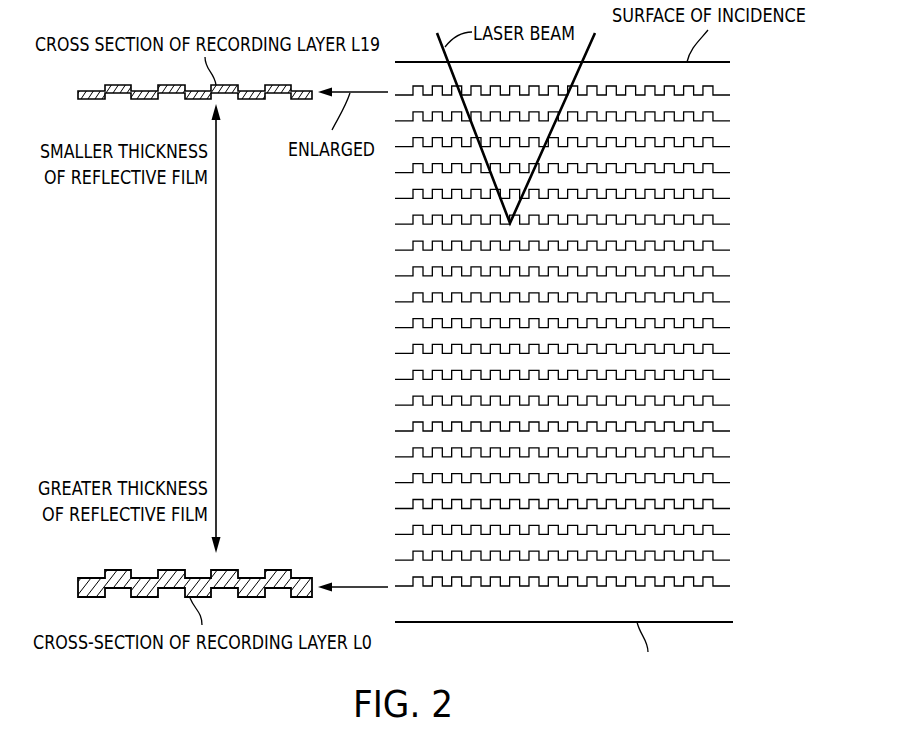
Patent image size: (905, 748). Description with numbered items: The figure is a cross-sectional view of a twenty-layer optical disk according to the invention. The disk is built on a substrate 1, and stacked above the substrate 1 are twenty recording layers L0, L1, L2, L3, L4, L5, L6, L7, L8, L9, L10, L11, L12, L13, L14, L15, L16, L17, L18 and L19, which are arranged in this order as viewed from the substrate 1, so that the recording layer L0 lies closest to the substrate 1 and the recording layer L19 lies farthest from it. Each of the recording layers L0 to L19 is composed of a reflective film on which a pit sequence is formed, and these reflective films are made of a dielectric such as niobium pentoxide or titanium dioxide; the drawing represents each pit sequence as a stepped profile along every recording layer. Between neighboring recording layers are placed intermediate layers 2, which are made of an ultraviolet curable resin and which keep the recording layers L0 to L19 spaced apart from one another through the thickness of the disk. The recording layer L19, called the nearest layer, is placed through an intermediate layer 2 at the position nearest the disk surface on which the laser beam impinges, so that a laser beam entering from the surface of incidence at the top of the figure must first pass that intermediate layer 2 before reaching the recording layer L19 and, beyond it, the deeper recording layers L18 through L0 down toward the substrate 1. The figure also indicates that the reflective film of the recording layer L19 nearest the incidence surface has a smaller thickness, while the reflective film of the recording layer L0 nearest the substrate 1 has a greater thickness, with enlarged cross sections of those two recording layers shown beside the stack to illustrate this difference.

The substrate 1 is at (580, 371).
The intermediate layer 2 is at (403, 136).
The recording layer L0 is at (576, 585).
The recording layer L1 is at (576, 559).
The recording layer L2 is at (576, 533).
The recording layer L3 is at (576, 508).
The recording layer L4 is at (576, 482).
The recording layer L5 is at (576, 456).
The recording layer L6 is at (576, 430).
The recording layer L7 is at (576, 404).
The recording layer L8 is at (576, 378).
The recording layer L9 is at (576, 352).
The recording layer L10 is at (580, 327).
The recording layer L11 is at (580, 301).
The recording layer L12 is at (580, 275).
The recording layer L13 is at (580, 249).
The recording layer L14 is at (580, 223).
The recording layer L15 is at (580, 197).
The recording layer L16 is at (580, 172).
The recording layer L17 is at (580, 146).
The recording layer L18 is at (580, 120).
The recording layer (nearest layer) L19 is at (580, 94).